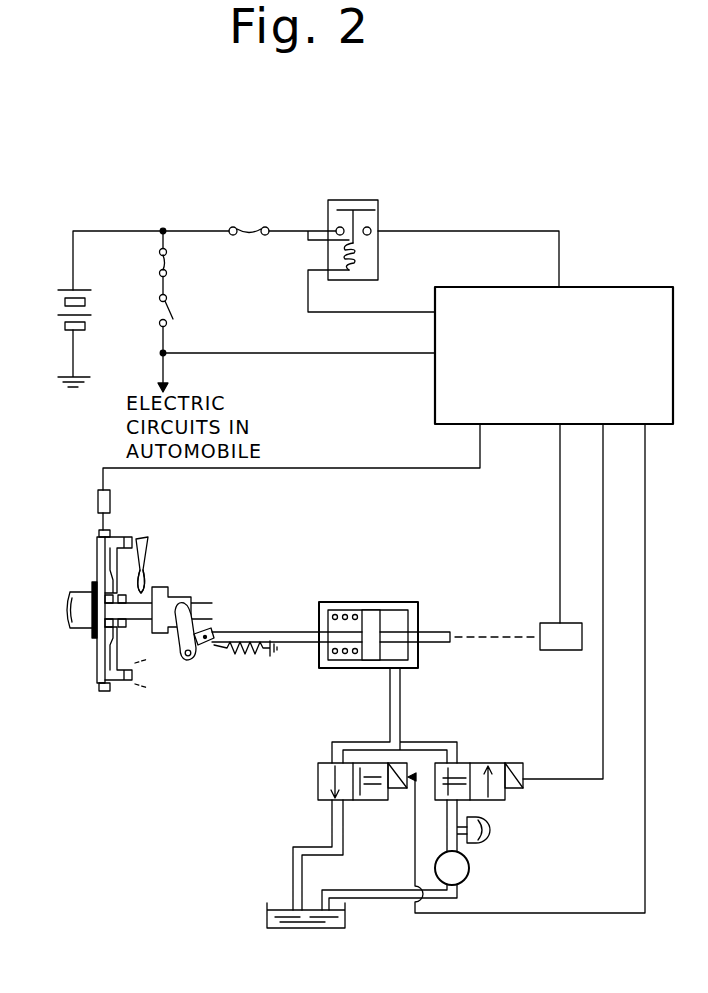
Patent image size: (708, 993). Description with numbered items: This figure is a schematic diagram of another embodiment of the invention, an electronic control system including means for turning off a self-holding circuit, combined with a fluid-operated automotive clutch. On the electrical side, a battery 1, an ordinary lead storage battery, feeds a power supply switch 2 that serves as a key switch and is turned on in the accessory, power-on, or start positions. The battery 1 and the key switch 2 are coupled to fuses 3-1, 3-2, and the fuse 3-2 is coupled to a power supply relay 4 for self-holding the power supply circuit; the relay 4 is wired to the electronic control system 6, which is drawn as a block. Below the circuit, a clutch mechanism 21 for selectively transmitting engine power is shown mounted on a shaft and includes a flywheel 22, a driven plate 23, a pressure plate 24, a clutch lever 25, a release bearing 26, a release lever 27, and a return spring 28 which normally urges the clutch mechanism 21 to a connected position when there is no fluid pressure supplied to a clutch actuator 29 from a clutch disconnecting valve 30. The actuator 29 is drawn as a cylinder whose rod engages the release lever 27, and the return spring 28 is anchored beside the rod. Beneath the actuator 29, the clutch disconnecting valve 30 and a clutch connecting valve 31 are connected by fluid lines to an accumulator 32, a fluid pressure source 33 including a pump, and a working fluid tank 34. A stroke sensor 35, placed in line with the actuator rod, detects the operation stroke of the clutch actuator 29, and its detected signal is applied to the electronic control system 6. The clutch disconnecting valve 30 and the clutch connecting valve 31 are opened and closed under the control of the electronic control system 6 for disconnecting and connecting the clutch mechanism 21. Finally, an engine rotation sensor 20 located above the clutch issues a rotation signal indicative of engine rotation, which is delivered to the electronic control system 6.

The battery 1 is at (93, 303).
The power supply switch 2 is at (180, 306).
The fuse 3-1 is at (180, 260).
The fuse 3-2 is at (241, 228).
The power supply relay 4 is at (383, 206).
The electronic control system 6 is at (640, 287).
The engine rotation sensor 20 is at (97, 497).
The clutch mechanism 21 is at (86, 557).
The flywheel 22 is at (95, 662).
The driven plate 23 is at (137, 542).
The pressure plate 24 is at (125, 683).
The clutch lever 25 is at (150, 582).
The release bearing 26 is at (170, 593).
The release lever 27 is at (170, 656).
The return spring 28 is at (245, 656).
The clutch actuator 29 is at (401, 602).
The clutch disconnecting valve 30 is at (488, 763).
The clutch connecting valve 31 is at (318, 777).
The accumulator 32 is at (500, 832).
The fluid pressure source 33 is at (470, 872).
The working fluid tank 34 is at (270, 908).
The stroke sensor 35 is at (560, 651).